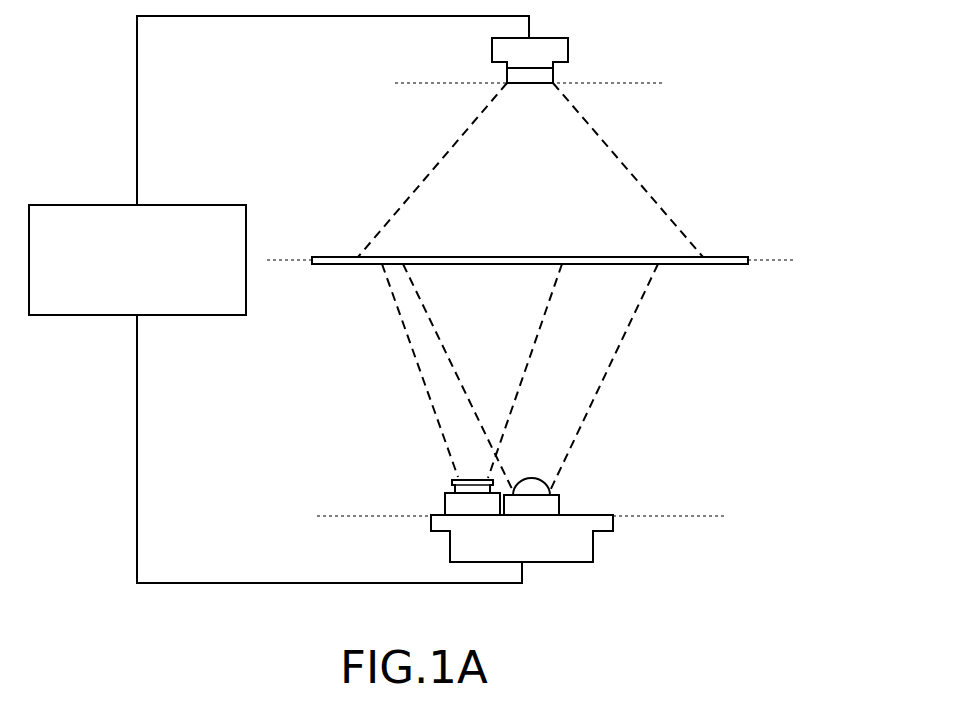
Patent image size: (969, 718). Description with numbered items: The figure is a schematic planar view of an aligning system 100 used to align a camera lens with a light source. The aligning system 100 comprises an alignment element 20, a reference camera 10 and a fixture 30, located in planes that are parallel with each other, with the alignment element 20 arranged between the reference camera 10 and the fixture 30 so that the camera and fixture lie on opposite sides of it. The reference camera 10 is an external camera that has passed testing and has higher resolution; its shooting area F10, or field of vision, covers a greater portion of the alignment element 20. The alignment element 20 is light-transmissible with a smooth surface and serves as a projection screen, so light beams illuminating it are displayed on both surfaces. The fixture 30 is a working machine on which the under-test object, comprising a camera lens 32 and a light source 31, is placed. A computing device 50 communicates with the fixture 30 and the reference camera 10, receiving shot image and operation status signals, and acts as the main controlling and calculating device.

The aligning system 100 is at (698, 55).
The reference camera 10 is at (547, 47).
The shooting area F10 is at (603, 172).
The alignment element 20 is at (723, 257).
The fixture 30 is at (587, 520).
The light source 31 is at (553, 500).
The camera lens 32 is at (460, 503).
The computing device 50 is at (192, 217).